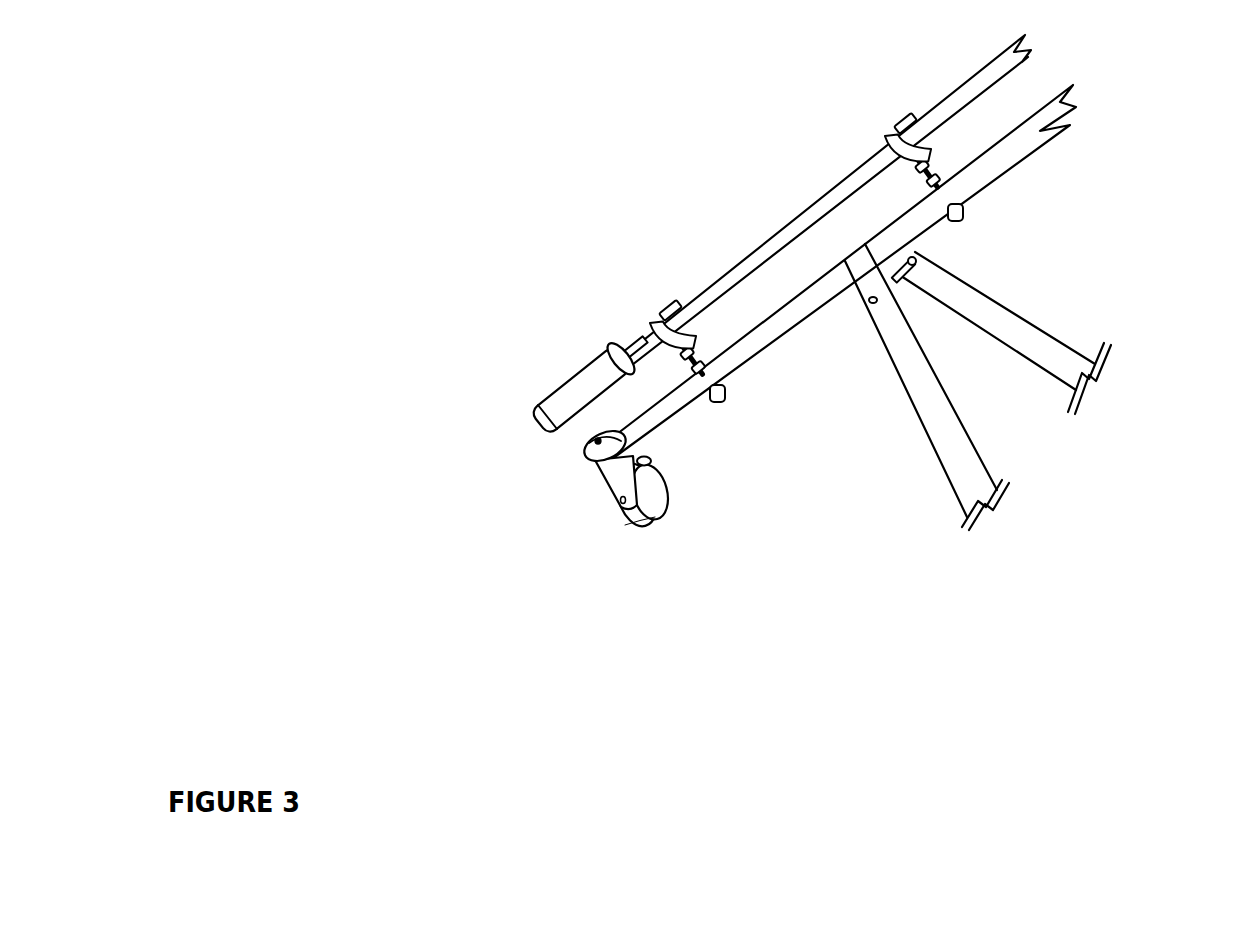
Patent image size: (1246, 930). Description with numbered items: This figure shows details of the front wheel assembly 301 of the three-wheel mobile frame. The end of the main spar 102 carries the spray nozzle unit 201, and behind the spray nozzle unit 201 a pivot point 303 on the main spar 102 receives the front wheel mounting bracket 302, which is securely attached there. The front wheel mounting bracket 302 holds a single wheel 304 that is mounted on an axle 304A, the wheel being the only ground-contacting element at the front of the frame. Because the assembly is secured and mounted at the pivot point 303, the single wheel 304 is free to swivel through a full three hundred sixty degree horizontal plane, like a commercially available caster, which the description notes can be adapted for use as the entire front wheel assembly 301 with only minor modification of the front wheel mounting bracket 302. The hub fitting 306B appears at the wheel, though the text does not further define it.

The main spar 102 is at (1062, 95).
The spray nozzle unit 201 is at (857, 167).
The front wheel assembly 301 is at (569, 506).
The front wheel mounting bracket 302 is at (597, 476).
The pivot point 303 is at (586, 446).
The single wheel 304 is at (660, 497).
The axle 304A is at (630, 525).
The axle hub 306B is at (650, 463).